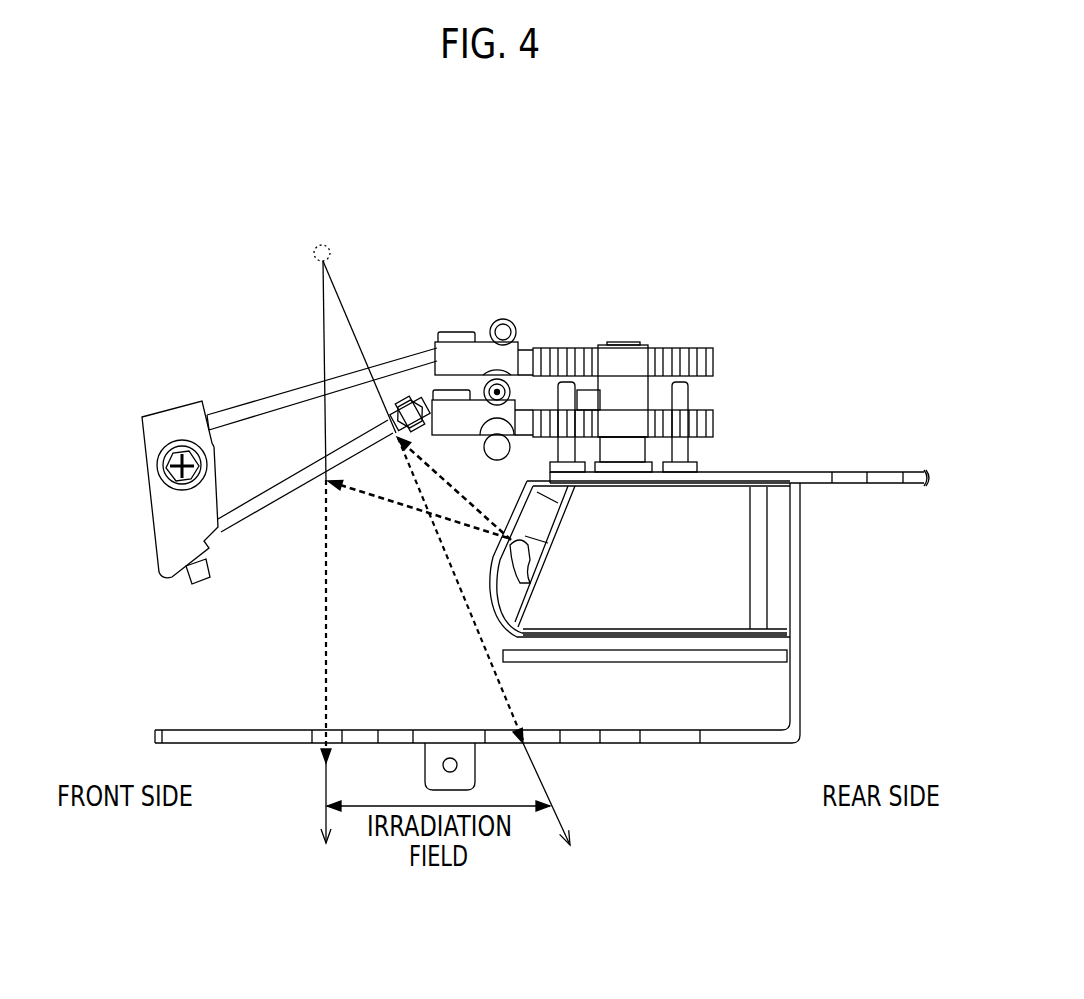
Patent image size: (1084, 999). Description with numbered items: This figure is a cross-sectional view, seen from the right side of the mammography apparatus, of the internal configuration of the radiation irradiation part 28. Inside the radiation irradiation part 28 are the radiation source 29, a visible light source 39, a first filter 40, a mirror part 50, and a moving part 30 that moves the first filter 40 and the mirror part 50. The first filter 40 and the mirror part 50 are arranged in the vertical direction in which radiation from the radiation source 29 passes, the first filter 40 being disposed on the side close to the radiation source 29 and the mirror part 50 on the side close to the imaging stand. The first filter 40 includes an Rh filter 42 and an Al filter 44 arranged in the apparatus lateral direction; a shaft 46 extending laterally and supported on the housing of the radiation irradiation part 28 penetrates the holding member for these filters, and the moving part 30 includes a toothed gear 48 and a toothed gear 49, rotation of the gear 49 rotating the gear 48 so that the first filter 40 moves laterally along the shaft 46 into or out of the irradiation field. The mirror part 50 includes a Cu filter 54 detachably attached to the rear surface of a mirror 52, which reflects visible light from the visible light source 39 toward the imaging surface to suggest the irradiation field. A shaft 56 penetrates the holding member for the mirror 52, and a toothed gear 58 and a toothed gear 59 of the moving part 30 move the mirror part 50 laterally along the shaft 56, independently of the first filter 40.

The radiation irradiation part 28 is at (708, 182).
The radiation source 29 is at (315, 249).
The moving part 30 is at (797, 333).
The visible light source 39 is at (522, 556).
The first filter 40 is at (210, 411).
The Rh filter 42 is at (278, 385).
The Al filter 44 is at (322, 389).
The shaft 46 is at (499, 320).
The toothed gear 48 is at (558, 358).
The toothed gear 49 is at (712, 353).
The mirror part 50 is at (243, 521).
The mirror 52 is at (300, 497).
The Cu filter 54 is at (290, 477).
The shaft 56 is at (497, 392).
The toothed gear 58 is at (581, 412).
The toothed gear 59 is at (712, 417).